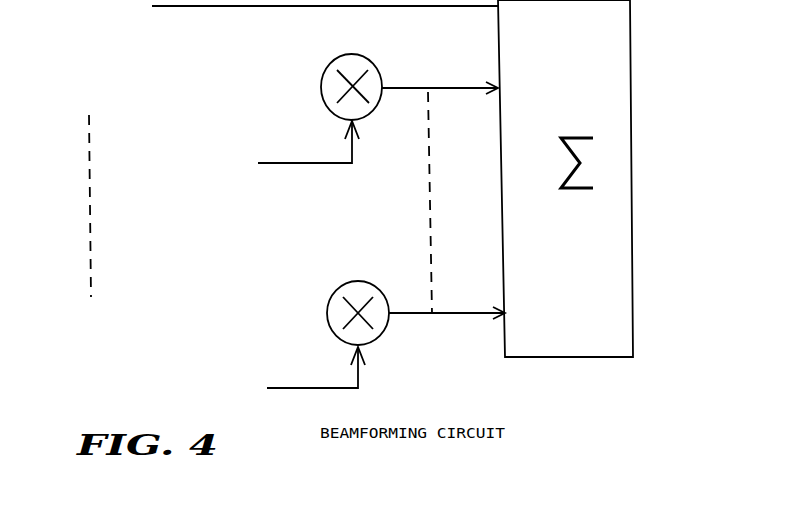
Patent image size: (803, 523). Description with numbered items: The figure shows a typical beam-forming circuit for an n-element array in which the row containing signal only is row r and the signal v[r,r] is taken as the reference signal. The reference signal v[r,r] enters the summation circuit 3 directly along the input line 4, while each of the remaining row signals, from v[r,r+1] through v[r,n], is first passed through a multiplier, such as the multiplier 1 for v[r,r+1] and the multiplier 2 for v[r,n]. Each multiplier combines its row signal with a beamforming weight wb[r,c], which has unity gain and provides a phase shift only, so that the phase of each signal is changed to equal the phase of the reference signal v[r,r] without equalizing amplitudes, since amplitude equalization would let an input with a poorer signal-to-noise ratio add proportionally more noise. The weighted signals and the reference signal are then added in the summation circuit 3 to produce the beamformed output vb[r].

The multiplier for V[r,r+1] and Wb[r,r+1] 1 is at (318, 88).
The multiplier for V[r,n] and Wb[r,n] 2 is at (327, 315).
The summation circuit 3 is at (631, 162).
The V[r,r] input line 4 is at (281, 13).